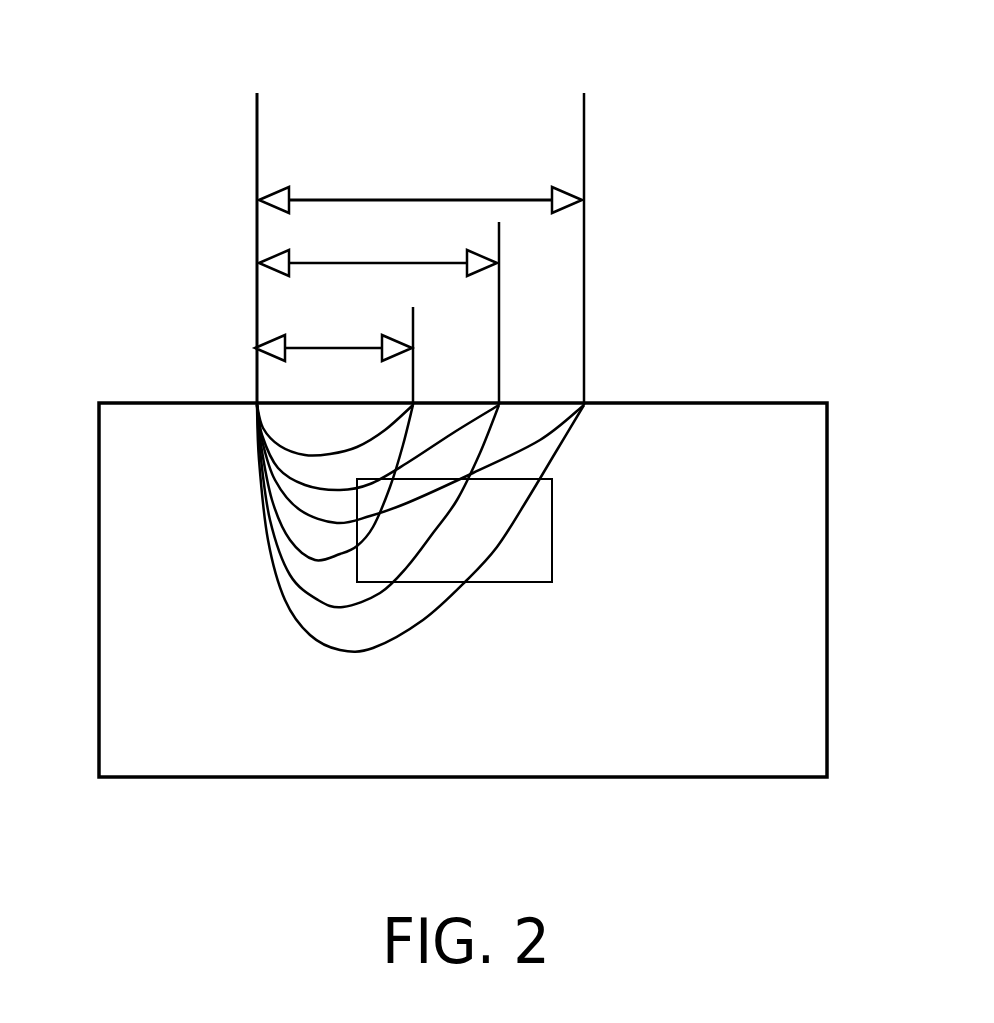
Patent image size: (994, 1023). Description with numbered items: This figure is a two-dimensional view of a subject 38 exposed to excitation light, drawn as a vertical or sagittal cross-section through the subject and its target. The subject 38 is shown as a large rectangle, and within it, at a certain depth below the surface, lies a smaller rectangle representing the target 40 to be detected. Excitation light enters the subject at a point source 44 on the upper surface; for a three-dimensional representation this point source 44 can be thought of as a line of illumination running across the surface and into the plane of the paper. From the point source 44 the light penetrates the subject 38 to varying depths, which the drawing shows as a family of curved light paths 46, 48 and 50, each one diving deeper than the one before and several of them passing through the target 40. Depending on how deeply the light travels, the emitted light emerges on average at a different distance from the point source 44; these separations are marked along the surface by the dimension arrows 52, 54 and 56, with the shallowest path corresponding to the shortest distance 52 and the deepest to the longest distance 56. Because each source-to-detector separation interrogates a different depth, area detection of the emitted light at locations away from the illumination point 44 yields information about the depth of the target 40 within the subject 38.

The subject 38 is at (813, 687).
The target 40 is at (544, 539).
The point source 44 is at (253, 400).
The light path 46 is at (280, 525).
The light path 48 is at (300, 587).
The light path 50 is at (407, 638).
The distance 52 is at (330, 348).
The distance 54 is at (337, 263).
The distance 56 is at (431, 200).